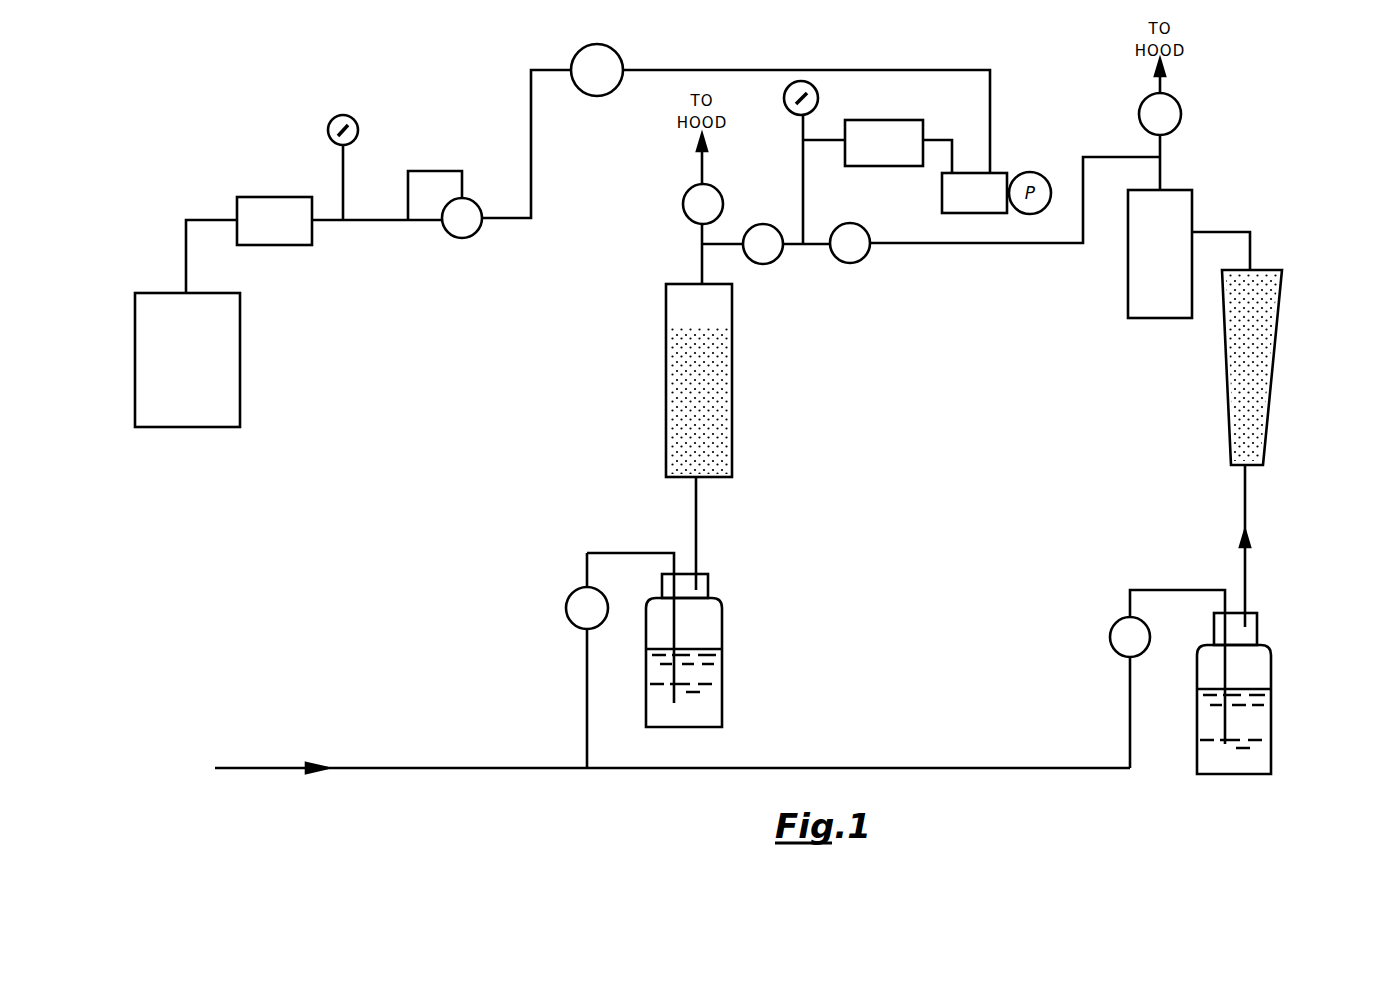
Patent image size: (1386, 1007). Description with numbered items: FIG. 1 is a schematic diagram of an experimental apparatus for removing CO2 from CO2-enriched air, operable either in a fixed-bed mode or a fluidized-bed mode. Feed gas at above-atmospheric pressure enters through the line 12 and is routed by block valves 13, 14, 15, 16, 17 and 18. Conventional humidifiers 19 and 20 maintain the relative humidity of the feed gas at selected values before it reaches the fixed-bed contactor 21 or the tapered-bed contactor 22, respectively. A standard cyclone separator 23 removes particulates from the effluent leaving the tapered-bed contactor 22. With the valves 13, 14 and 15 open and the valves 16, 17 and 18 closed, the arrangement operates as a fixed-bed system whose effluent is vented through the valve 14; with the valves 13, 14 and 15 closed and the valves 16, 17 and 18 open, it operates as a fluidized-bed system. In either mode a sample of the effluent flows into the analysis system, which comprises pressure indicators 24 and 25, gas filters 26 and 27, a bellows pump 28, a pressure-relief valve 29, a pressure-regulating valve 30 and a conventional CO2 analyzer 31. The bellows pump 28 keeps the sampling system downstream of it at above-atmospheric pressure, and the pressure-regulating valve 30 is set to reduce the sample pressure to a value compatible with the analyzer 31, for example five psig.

The line 12 is at (427, 768).
The block valve 13 is at (567, 606).
The block valve 14 is at (682, 197).
The block valve 15 is at (768, 263).
The block valve 16 is at (858, 262).
The block valve 17 is at (1109, 636).
The block valve 18 is at (1182, 114).
The humidifier 19 is at (723, 616).
The humidifier 20 is at (1271, 655).
The fixed-bed contactor 21 is at (734, 369).
The tapered-bed contactor 22 is at (1278, 342).
The cyclone separator 23 is at (1193, 202).
The pressure indicator 24 is at (817, 95).
The pressure indicator 25 is at (359, 124).
The gas filter 26 is at (868, 167).
The gas filter 27 is at (313, 238).
The bellows pump 28 is at (941, 197).
The pressure-relief valve 29 is at (620, 48).
The pressure-regulating valve 30 is at (483, 228).
The CO2 analyzer 31 is at (241, 350).